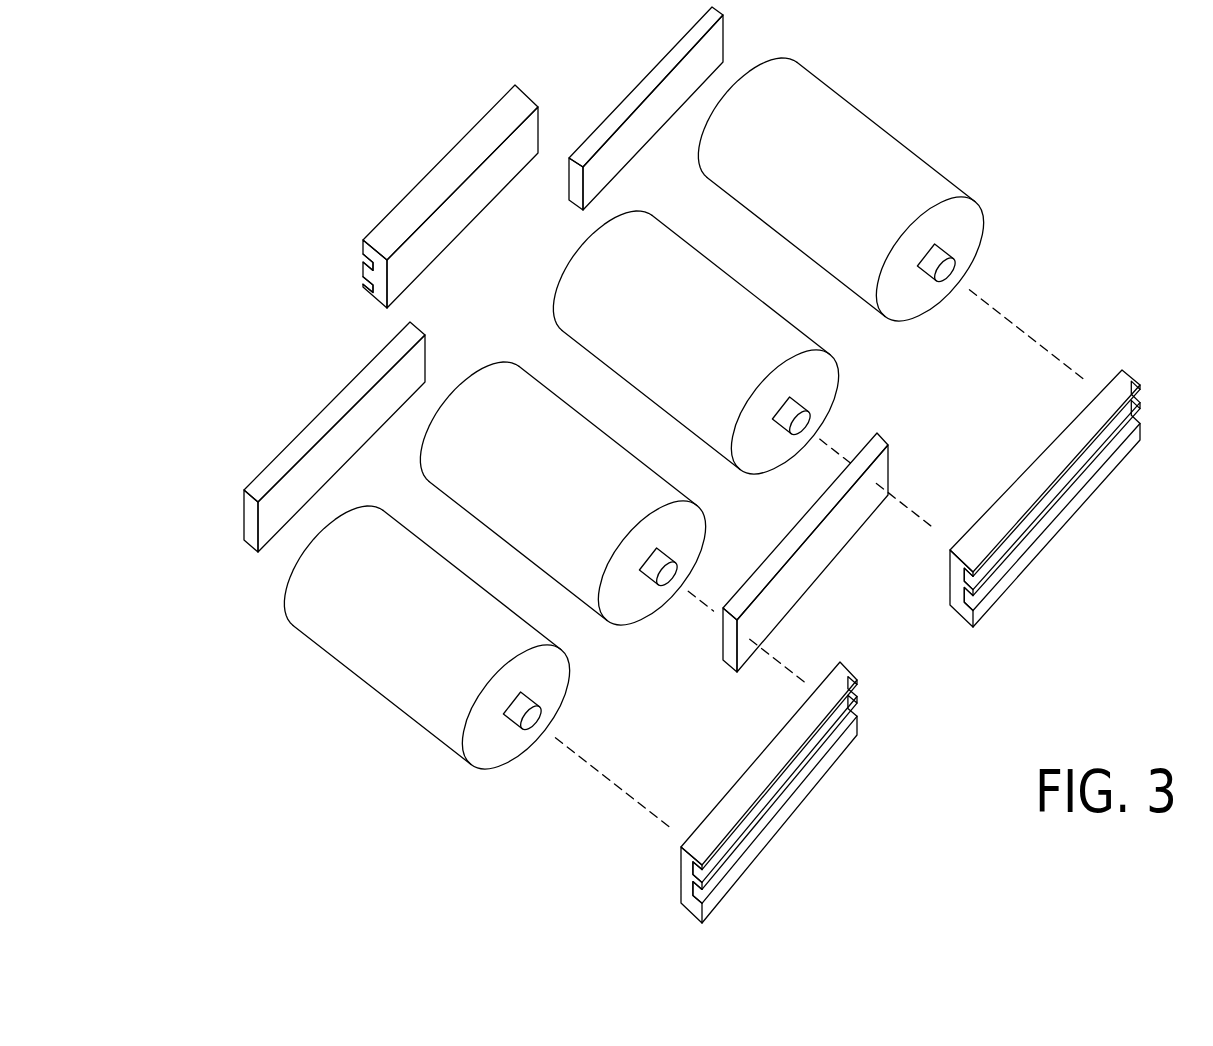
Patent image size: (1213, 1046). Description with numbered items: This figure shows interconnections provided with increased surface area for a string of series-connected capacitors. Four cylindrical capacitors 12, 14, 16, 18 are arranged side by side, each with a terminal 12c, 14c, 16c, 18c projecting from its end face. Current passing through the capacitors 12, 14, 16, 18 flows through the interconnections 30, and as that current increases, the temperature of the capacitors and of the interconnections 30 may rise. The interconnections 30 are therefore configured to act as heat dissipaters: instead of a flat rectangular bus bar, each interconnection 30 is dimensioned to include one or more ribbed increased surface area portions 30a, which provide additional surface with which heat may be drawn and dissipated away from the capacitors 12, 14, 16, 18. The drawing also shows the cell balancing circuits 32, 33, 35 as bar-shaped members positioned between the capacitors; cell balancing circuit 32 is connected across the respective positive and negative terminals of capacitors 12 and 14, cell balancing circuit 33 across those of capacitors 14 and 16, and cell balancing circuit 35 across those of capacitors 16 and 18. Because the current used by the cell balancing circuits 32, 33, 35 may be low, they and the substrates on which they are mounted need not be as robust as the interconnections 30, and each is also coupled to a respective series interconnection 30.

The capacitor 12 is at (477, 667).
The shaft of first roller 12c is at (527, 728).
The capacitor 14 is at (612, 522).
The shaft of second roller 14c is at (673, 560).
The capacitor 16 is at (742, 369).
The shaft of third roller 16c is at (813, 420).
The capacitor 18 is at (891, 219).
The shaft of fourth roller 18c is at (955, 258).
The interconnection 30 is at (751, 504).
The increased surface area portion 30a is at (363, 265).
The cell balancing circuit 32 is at (240, 507).
The cell balancing circuit 33 is at (820, 552).
The cell balancing circuit 35 is at (625, 95).